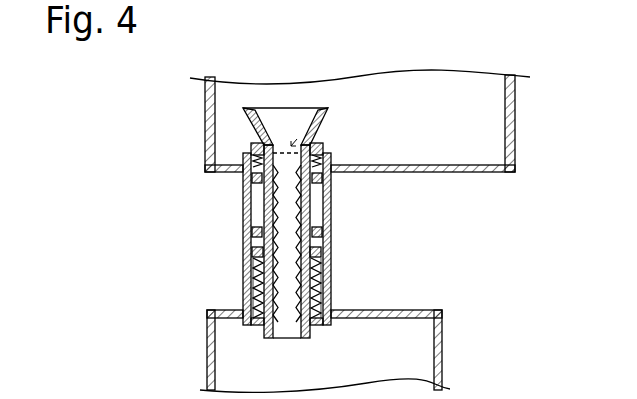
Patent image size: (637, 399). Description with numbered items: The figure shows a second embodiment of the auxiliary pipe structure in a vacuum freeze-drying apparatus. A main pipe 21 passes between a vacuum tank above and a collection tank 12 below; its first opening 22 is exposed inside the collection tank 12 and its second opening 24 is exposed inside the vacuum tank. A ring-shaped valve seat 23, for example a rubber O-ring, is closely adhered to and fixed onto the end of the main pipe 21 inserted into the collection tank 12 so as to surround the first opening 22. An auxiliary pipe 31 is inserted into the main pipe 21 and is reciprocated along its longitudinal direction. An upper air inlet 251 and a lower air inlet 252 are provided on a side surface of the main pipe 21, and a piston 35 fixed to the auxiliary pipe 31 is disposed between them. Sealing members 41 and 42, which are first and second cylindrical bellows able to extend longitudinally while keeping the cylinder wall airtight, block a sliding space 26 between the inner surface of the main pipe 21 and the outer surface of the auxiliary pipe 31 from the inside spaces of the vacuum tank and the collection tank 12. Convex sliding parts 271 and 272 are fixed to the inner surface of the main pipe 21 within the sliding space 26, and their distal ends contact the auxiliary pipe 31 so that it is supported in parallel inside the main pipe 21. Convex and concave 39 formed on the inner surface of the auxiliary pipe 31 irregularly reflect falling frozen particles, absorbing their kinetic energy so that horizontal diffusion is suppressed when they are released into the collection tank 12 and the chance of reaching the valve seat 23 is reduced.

The collection tank 12 is at (207, 358).
The main pipe 21 is at (243, 207).
The first opening 22 is at (253, 326).
The valve seat 23 is at (240, 312).
The second opening 24 is at (318, 135).
The upper air inlet 251 is at (243, 190).
The lower air inlet 252 is at (243, 242).
The sliding space 26 is at (316, 198).
The sliding part 271 is at (320, 178).
The sliding part 272 is at (320, 252).
The auxiliary pipe 31 is at (257, 219).
The piston 35 is at (308, 229).
The convex and concave 39 is at (315, 287).
The sealing member 41 is at (243, 157).
The sealing member 42 is at (243, 281).